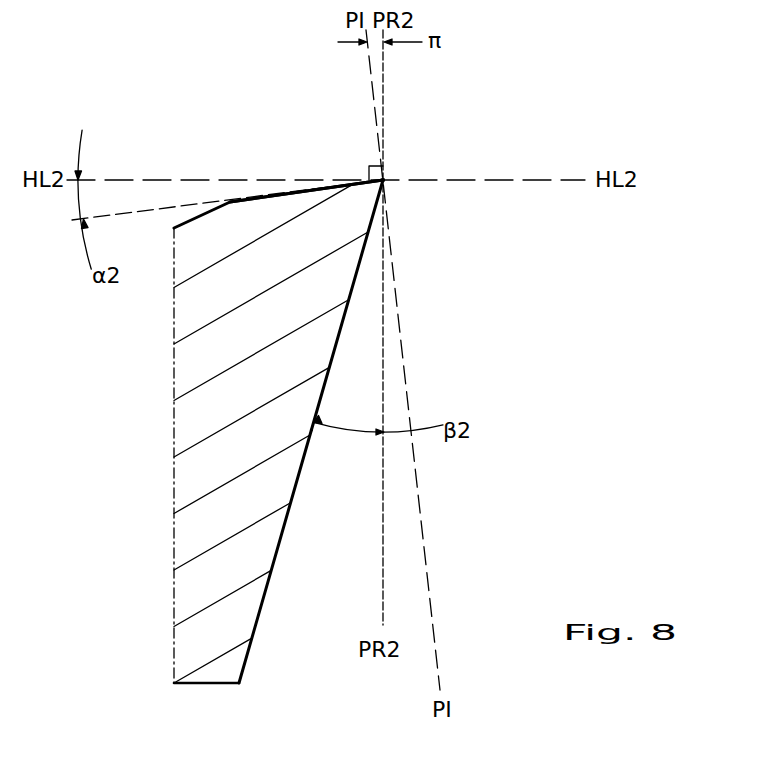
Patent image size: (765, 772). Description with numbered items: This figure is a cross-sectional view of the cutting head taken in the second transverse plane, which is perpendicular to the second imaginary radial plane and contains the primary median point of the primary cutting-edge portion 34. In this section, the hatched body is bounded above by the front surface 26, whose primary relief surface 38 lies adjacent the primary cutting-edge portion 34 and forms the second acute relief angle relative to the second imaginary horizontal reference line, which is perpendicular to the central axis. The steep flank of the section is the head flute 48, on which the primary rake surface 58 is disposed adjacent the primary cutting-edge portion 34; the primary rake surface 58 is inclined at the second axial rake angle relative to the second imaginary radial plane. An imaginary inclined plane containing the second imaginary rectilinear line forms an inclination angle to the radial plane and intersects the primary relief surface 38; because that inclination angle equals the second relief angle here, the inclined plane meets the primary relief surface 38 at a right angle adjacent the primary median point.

The front surface 26 is at (270, 190).
The primary relief surface 38 is at (312, 202).
The primary cutting-edge portion 34 is at (383, 180).
The primary rake surface 58 is at (340, 335).
The head flute 48 is at (297, 495).